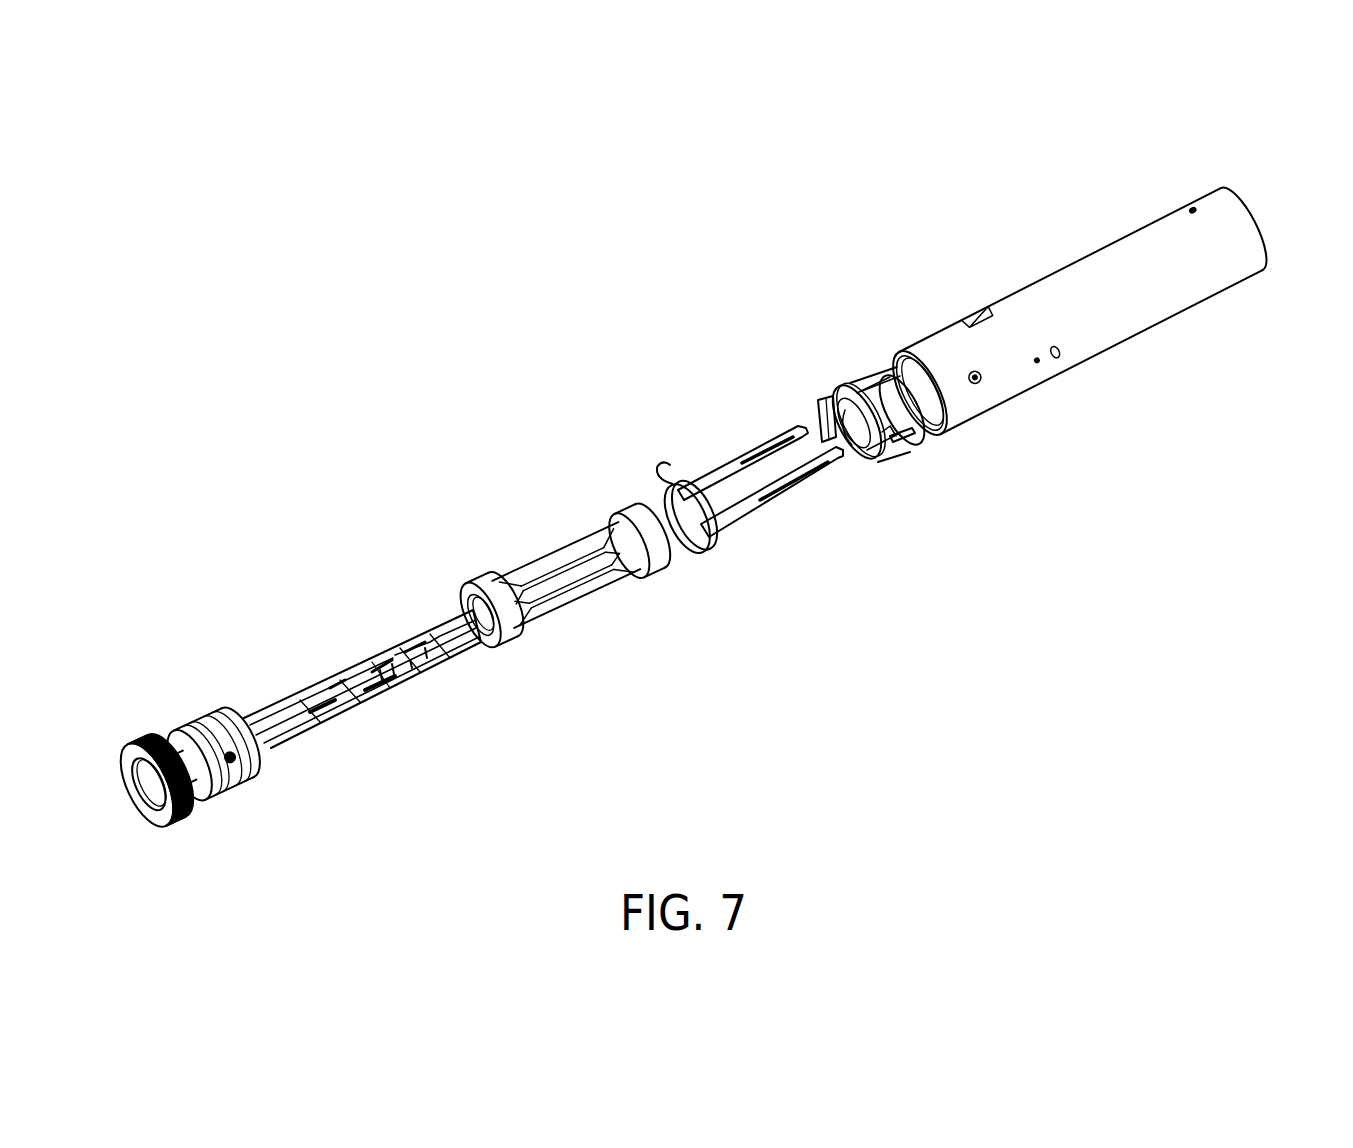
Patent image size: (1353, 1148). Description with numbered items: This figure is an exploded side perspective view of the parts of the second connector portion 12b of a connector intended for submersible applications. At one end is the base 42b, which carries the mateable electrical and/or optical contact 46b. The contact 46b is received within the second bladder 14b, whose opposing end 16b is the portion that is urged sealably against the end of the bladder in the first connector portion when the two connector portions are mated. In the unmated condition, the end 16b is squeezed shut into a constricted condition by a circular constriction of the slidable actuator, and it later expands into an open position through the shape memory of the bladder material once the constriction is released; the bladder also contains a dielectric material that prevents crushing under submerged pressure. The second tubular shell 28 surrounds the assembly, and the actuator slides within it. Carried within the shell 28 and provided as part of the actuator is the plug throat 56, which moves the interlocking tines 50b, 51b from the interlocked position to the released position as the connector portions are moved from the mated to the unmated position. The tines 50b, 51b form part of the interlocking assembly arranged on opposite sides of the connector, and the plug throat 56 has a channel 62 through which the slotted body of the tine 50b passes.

The second connector portion 12b is at (753, 202).
The second tubular shell 28 is at (997, 303).
The plug throat 56 is at (846, 372).
The channel 62 is at (846, 480).
The second interlocking tine 51b is at (737, 453).
The second interlocking tine 50b is at (779, 503).
The second bladder 14b is at (558, 535).
The opposing end of second bladder 16b is at (700, 550).
The electrical and/or optical contact 46b is at (450, 603).
The base 42b is at (237, 790).